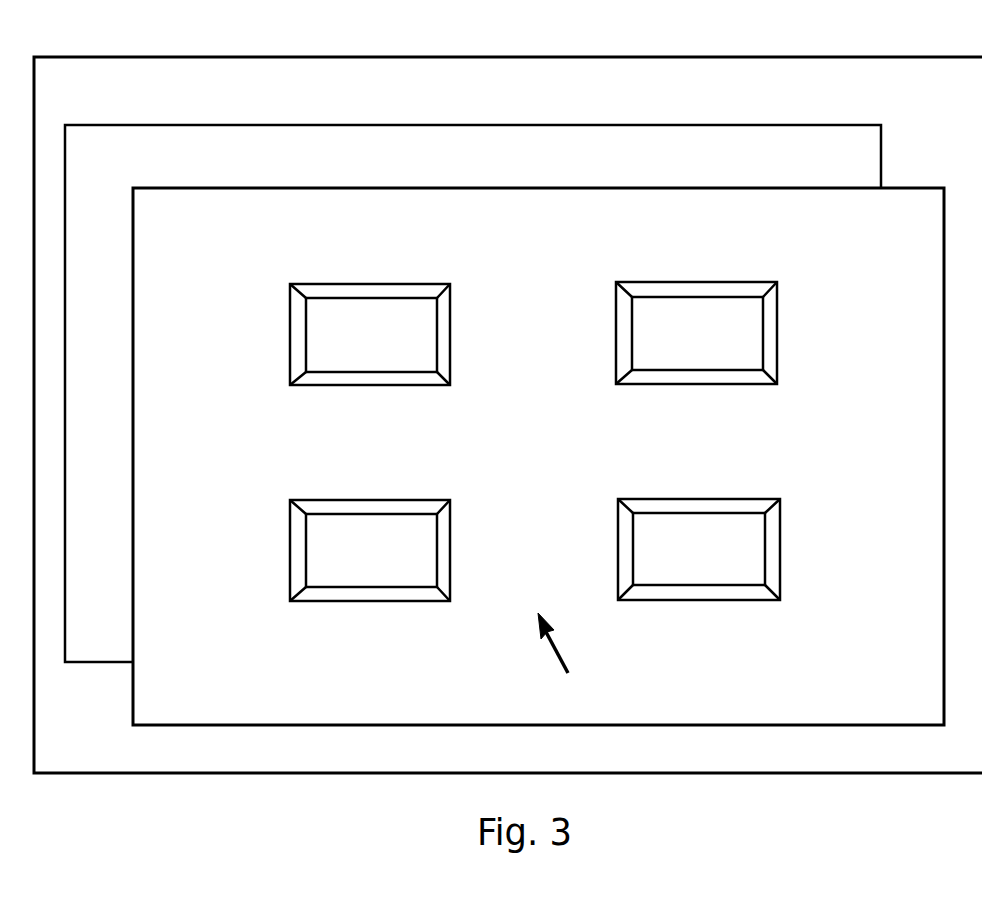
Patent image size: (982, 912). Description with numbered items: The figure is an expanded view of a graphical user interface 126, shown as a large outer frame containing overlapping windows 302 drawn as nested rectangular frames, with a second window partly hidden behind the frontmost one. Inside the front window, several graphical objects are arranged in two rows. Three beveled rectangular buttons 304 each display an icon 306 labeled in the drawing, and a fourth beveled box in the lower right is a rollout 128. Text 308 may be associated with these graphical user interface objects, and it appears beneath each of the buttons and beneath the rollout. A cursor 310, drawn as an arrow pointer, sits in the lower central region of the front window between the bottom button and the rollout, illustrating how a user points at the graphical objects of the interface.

The graphical user interface 126 is at (776, 57).
The windows 302 is at (617, 143).
The buttons 304 is at (374, 284).
The icons 306 is at (642, 342).
The text 308 is at (668, 413).
The rollout 128 is at (711, 498).
The cursor 310 is at (560, 653).